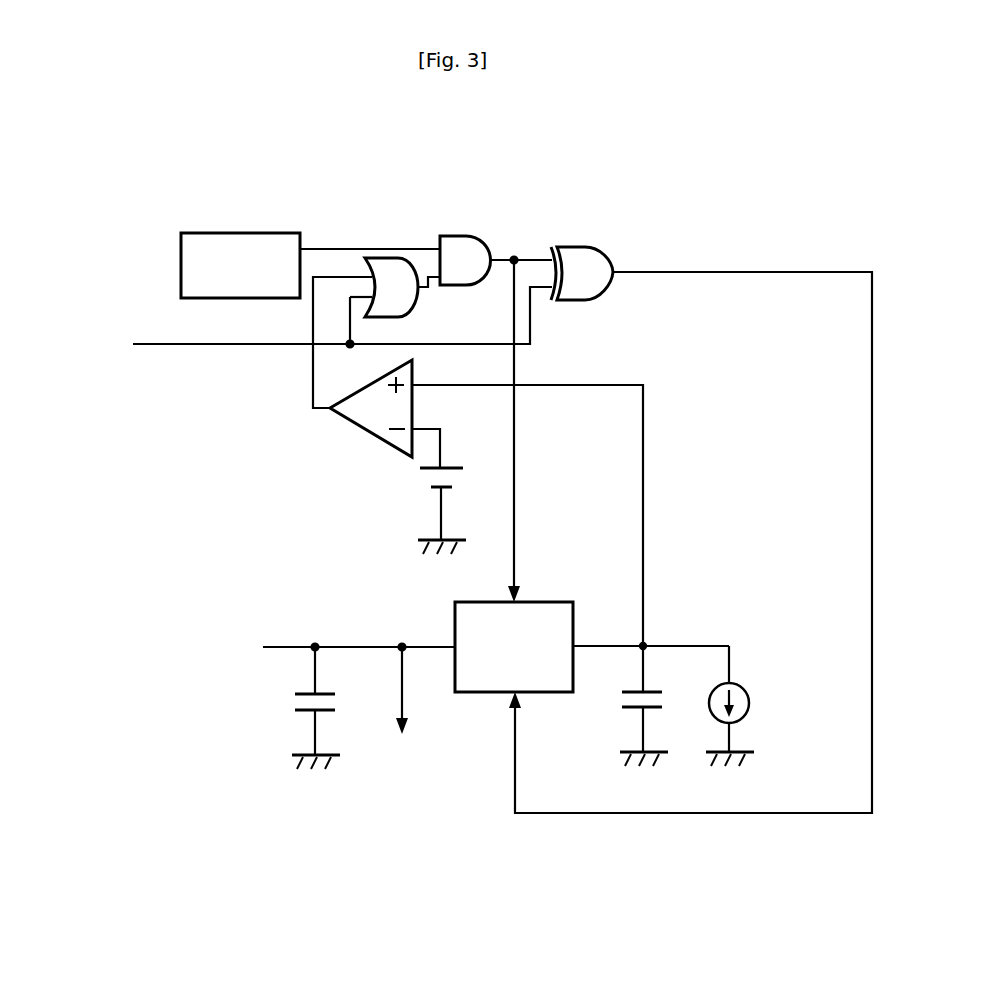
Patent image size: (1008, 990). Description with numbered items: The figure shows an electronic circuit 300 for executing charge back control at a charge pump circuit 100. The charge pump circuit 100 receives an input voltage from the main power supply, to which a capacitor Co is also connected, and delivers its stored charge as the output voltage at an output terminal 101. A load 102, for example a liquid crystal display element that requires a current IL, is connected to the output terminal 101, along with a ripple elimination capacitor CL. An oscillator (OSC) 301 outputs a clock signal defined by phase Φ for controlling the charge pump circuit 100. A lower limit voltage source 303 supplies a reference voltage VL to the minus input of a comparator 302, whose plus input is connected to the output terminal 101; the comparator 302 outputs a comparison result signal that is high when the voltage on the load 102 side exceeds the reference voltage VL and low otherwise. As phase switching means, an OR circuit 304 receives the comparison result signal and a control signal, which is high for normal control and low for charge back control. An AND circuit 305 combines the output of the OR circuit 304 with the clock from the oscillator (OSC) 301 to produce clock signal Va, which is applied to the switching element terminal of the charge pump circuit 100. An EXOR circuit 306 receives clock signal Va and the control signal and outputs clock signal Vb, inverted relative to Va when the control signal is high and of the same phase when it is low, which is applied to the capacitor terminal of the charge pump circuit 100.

The electronic circuit 300 is at (166, 170).
The oscillator (OSC) 301 is at (236, 233).
The comparator 302 is at (362, 432).
The lower limit voltage source 303 is at (418, 485).
The OR circuit 304 is at (420, 300).
The AND circuit 305 is at (459, 236).
The EXOR circuit 306 is at (572, 247).
The charge pump circuit 100 is at (548, 600).
The output terminal 101 is at (645, 644).
The load 102 is at (745, 688).